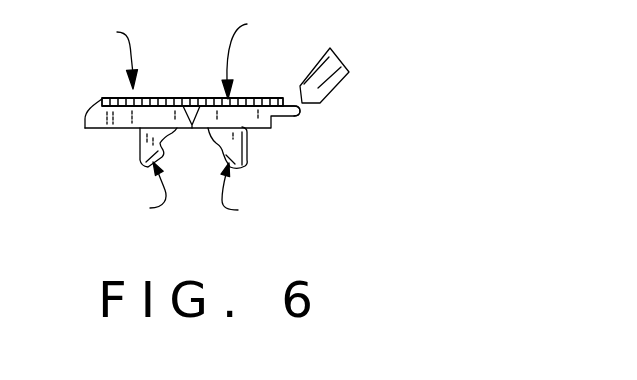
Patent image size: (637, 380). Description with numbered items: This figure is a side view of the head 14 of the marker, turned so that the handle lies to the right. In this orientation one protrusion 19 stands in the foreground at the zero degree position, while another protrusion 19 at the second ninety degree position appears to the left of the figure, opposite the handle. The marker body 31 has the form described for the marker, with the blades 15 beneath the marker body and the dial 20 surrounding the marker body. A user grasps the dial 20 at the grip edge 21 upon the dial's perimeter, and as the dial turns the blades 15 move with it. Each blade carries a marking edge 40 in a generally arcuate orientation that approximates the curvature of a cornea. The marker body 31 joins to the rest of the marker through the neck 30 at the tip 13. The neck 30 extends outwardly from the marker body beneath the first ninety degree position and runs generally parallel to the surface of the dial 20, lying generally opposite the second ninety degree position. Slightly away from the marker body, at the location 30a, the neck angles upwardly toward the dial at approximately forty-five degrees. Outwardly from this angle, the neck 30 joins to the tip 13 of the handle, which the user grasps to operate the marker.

The tip 13 is at (345, 70).
The head 14 is at (115, 55).
The blades 15 is at (140, 150).
The protrusion 19 is at (86, 123).
The dial 20 is at (248, 55).
The grip edge 21 is at (163, 97).
The neck 30 is at (303, 110).
The neck angle 30a is at (292, 104).
The marker body 31 is at (118, 114).
The marking edge 40 is at (196, 192).